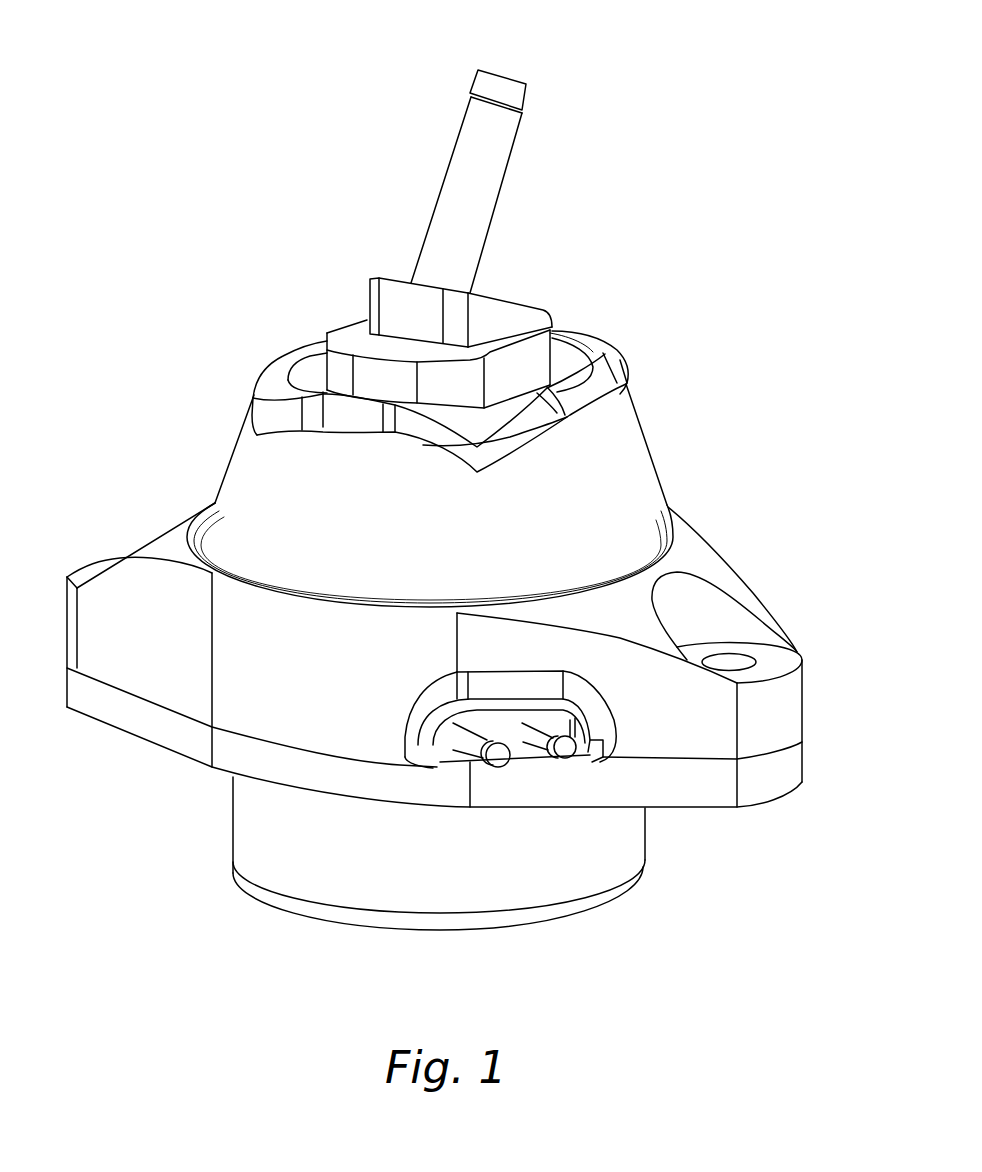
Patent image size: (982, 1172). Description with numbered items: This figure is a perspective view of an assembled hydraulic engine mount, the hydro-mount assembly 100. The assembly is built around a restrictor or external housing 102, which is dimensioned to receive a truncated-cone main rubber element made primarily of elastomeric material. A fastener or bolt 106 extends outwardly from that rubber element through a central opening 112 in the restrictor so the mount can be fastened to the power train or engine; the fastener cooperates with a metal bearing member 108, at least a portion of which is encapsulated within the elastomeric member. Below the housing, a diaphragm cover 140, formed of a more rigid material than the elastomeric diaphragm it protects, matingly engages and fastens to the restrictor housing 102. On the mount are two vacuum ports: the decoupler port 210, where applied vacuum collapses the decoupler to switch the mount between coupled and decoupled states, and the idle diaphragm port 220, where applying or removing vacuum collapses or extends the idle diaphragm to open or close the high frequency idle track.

The hydro-mount assembly 100 is at (742, 460).
The restrictor or external housing 102 is at (612, 374).
The fastener or bolt 106 is at (490, 179).
The metal bearing member 108 is at (372, 295).
The central opening 112 is at (585, 332).
The diaphragm cover 140 is at (630, 832).
The decoupler port 210 is at (501, 767).
The idle diaphragm port 220 is at (568, 758).